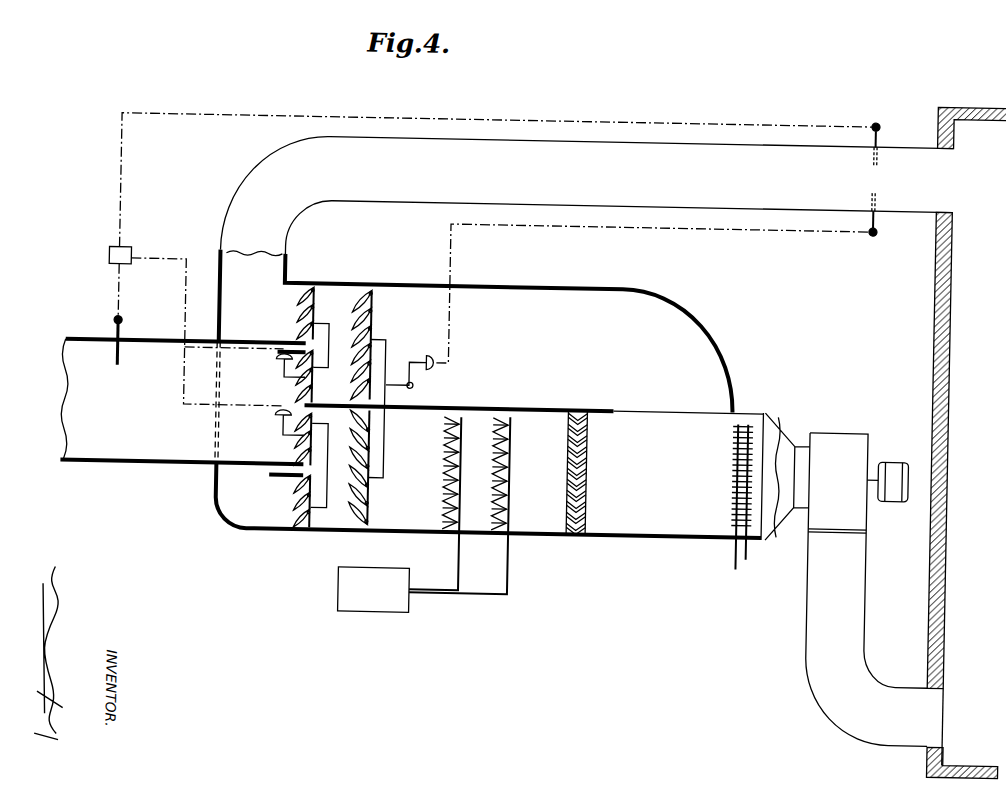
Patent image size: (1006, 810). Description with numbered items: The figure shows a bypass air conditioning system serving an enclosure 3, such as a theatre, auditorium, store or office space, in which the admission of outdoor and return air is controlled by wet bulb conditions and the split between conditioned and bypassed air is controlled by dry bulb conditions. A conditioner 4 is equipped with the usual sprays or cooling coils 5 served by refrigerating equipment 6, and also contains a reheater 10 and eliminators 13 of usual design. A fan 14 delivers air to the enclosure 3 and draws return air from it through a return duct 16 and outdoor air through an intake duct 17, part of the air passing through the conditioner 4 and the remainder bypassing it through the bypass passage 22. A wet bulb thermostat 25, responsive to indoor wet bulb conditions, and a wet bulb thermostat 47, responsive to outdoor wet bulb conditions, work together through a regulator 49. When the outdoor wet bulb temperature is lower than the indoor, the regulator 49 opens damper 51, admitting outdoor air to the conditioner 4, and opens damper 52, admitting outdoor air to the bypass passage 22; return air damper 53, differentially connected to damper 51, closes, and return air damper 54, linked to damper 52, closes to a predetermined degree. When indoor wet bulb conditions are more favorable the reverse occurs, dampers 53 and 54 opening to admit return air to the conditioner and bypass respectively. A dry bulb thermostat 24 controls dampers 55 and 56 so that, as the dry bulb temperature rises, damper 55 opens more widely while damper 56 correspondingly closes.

The enclosure 3 is at (977, 427).
The conditioner 4 is at (538, 524).
The cooling coils 5 is at (465, 490).
The refrigerating equipment 6 is at (401, 574).
The reheater 10 is at (741, 468).
The eliminators 13 is at (590, 448).
The fan 14 is at (838, 433).
The return duct 16 is at (404, 192).
The intake duct 17 is at (158, 455).
The bypass passage 22 is at (559, 357).
The dry bulb thermostat 24 is at (874, 228).
The wet bulb thermostat 25 is at (876, 120).
The wet bulb thermostat 47 is at (118, 358).
The regulator 49 is at (122, 260).
The damper 51 is at (300, 448).
The damper 52 is at (302, 380).
The return air damper 53 is at (300, 500).
The return air damper 54 is at (298, 313).
The damper 55 is at (371, 490).
The damper 56 is at (376, 326).